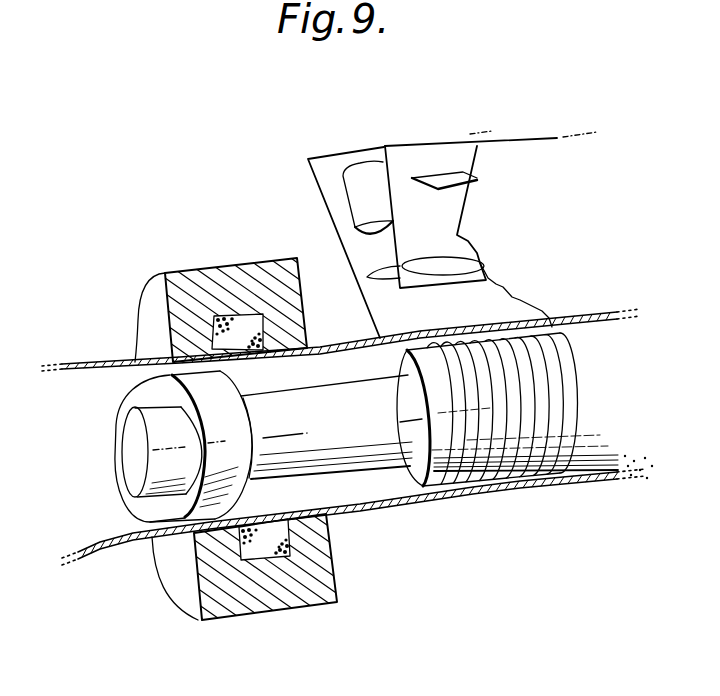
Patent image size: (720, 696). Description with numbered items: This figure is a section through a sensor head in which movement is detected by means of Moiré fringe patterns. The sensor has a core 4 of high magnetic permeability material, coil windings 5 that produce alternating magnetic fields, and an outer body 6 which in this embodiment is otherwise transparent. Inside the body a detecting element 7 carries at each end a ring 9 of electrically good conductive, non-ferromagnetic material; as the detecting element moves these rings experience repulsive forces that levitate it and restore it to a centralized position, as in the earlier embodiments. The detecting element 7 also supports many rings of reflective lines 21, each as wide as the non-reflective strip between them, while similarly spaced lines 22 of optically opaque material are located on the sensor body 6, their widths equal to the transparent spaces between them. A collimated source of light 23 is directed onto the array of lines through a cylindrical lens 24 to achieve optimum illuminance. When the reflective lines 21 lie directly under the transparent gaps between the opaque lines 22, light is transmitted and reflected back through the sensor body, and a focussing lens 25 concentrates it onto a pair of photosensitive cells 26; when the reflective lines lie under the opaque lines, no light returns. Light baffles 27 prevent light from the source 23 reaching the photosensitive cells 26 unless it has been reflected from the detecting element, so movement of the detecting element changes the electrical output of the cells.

The core 4 is at (285, 605).
The coil windings 5 is at (249, 531).
The outer body 6 is at (132, 536).
The detecting element 7 is at (323, 398).
The ring of conductive non-ferromagnetic material 9 is at (168, 393).
The reflective lines 21 is at (540, 393).
The optically opaque lines 22 is at (482, 327).
The collimated source of light 23 is at (355, 200).
The cylindrical lens 24 is at (366, 277).
The focussing lens 25 is at (447, 262).
The photosensitive cells 26 is at (438, 172).
The light baffles 27 is at (390, 143).